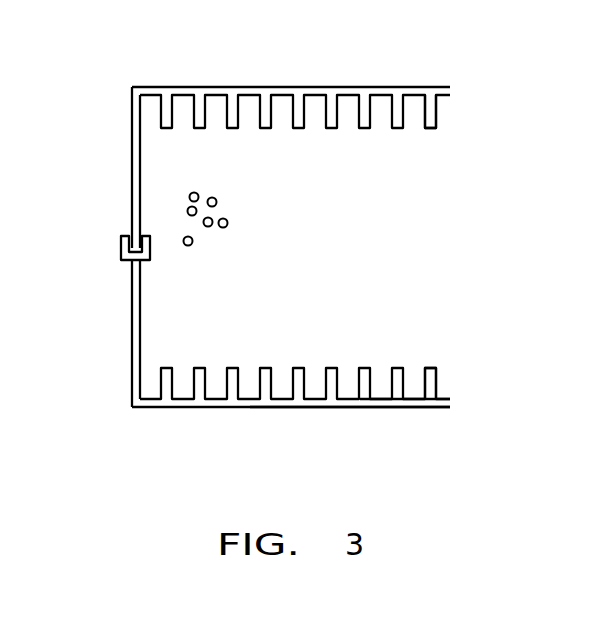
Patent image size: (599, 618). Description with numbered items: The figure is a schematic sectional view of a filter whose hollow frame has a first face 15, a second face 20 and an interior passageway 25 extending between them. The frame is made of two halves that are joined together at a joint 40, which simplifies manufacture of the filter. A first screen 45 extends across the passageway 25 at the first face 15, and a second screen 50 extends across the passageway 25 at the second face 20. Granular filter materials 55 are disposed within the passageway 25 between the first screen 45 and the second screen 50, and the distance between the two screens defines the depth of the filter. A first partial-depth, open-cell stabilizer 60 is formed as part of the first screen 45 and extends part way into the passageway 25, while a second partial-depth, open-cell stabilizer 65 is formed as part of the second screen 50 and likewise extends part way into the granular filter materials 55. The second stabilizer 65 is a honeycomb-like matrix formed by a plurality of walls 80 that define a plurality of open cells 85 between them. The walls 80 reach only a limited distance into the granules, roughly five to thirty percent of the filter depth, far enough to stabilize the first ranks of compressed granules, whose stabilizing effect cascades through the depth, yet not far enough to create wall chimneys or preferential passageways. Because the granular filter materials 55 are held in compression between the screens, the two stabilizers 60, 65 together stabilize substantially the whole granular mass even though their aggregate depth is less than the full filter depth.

The first face 15 is at (218, 88).
The first screen 45 is at (348, 88).
The first partial-depth, open-cell stabilizer 60 is at (435, 112).
The second face 20 is at (217, 405).
The second partial-depth, open-cell stabilizer 65 is at (367, 373).
The walls 80 is at (433, 383).
The open cells 85 is at (408, 390).
The second screen 50 is at (310, 407).
The joint 40 is at (120, 243).
The granular filter materials 55 is at (176, 272).
The interior passageway 25 is at (273, 288).